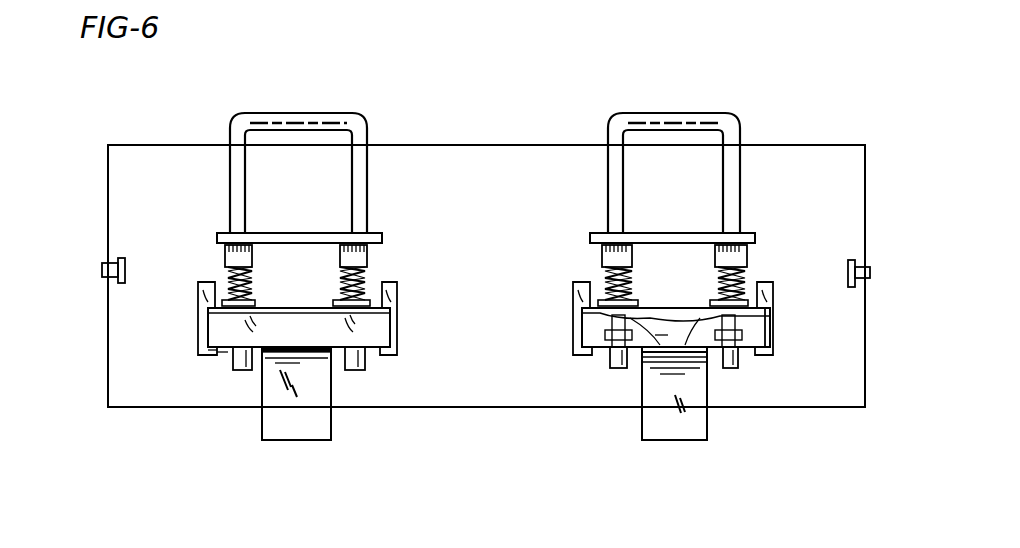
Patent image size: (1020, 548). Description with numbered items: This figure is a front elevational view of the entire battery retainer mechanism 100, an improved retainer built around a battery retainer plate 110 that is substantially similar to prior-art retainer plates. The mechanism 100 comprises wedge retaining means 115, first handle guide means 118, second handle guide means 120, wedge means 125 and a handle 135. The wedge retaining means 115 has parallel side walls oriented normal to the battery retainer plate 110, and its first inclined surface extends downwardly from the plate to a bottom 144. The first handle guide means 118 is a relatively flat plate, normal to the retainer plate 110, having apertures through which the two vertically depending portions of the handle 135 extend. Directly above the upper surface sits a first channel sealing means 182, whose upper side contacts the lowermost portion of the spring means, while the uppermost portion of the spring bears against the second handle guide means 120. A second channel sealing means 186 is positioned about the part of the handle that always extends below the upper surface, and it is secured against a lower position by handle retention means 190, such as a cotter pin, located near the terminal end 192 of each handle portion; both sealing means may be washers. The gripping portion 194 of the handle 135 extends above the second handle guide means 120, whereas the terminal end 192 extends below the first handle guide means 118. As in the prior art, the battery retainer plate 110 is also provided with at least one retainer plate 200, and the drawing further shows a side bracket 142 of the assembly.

The battery retainer mechanism 100 is at (100, 178).
The battery retainer plate 110 is at (117, 370).
The wedge retaining means 115 is at (195, 350).
The first handle guide means 118 is at (707, 355).
The second handle guide means 120 is at (746, 230).
The wedge means 125 is at (225, 352).
The handle 135 is at (320, 107).
The side bracket 142 is at (205, 282).
The bottom 144 is at (208, 350).
The first channel sealing means 182 is at (610, 303).
The second channel sealing means 186 is at (662, 338).
The handle retention means 190 is at (632, 343).
The terminal end 192 is at (240, 370).
The gripping portion 194 is at (300, 118).
The retainer plate 200 is at (312, 425).